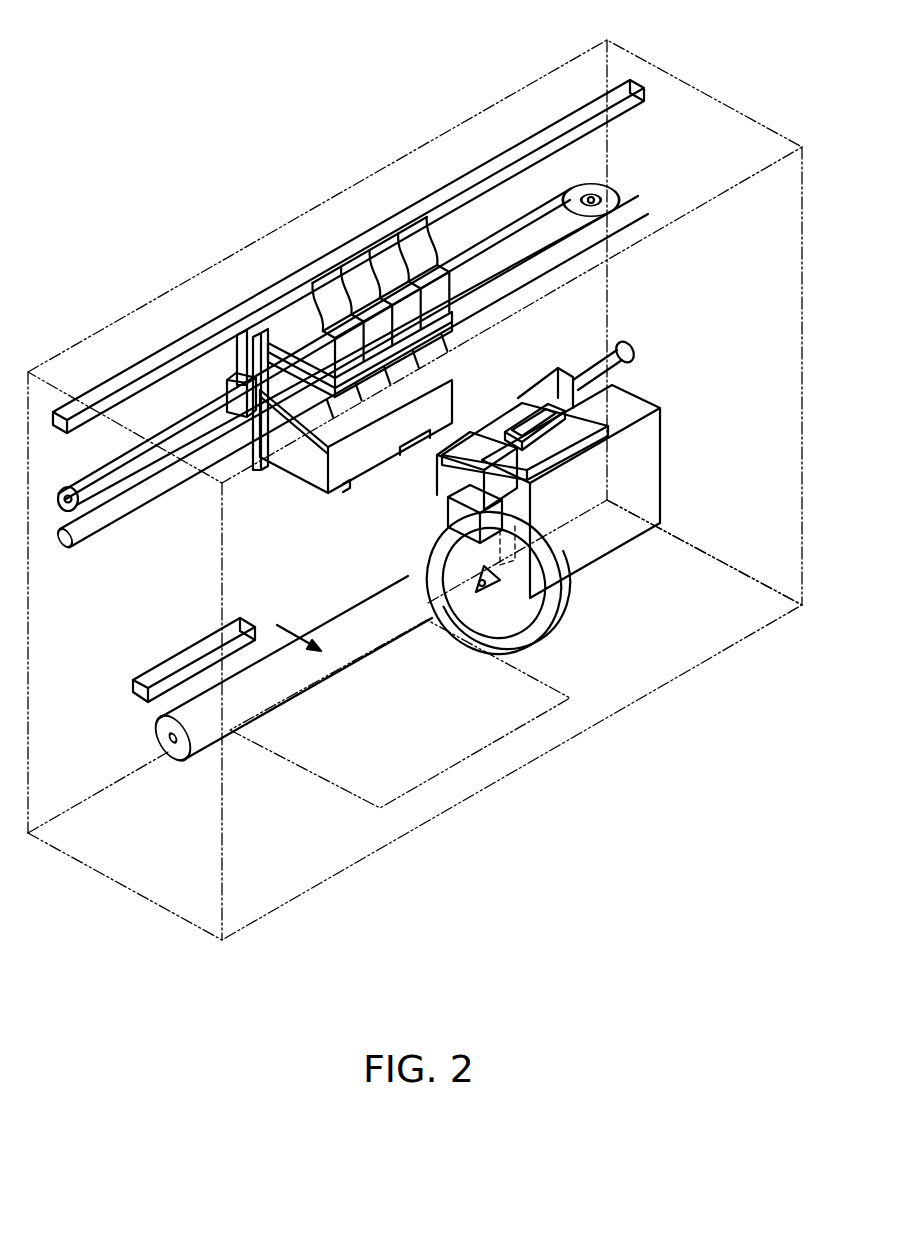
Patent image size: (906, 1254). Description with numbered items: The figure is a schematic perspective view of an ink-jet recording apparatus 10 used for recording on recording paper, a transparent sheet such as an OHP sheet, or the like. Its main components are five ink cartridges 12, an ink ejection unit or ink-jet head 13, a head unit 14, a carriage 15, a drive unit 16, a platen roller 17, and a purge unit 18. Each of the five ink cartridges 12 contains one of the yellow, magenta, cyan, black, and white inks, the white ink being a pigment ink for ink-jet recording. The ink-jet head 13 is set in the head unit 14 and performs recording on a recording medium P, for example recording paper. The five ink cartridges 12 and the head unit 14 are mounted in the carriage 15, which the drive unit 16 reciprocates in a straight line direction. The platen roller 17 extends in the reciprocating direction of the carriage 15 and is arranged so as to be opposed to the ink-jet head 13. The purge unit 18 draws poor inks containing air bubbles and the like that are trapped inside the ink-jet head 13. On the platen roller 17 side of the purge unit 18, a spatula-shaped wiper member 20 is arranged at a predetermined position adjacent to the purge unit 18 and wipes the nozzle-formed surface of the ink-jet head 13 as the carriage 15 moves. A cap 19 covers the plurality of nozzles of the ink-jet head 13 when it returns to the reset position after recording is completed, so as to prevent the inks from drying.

The ink-jet recording apparatus 10 is at (290, 58).
The ink cartridges 12 is at (410, 275).
The ink-jet head 13 is at (413, 452).
The head unit 14 is at (375, 483).
The carriage 15 is at (247, 352).
The drive unit 16 is at (633, 70).
The platen roller 17 is at (300, 668).
The purge unit 18 is at (720, 505).
The cap 19 is at (655, 410).
The wiper member 20 is at (468, 495).
The recording medium P is at (352, 775).